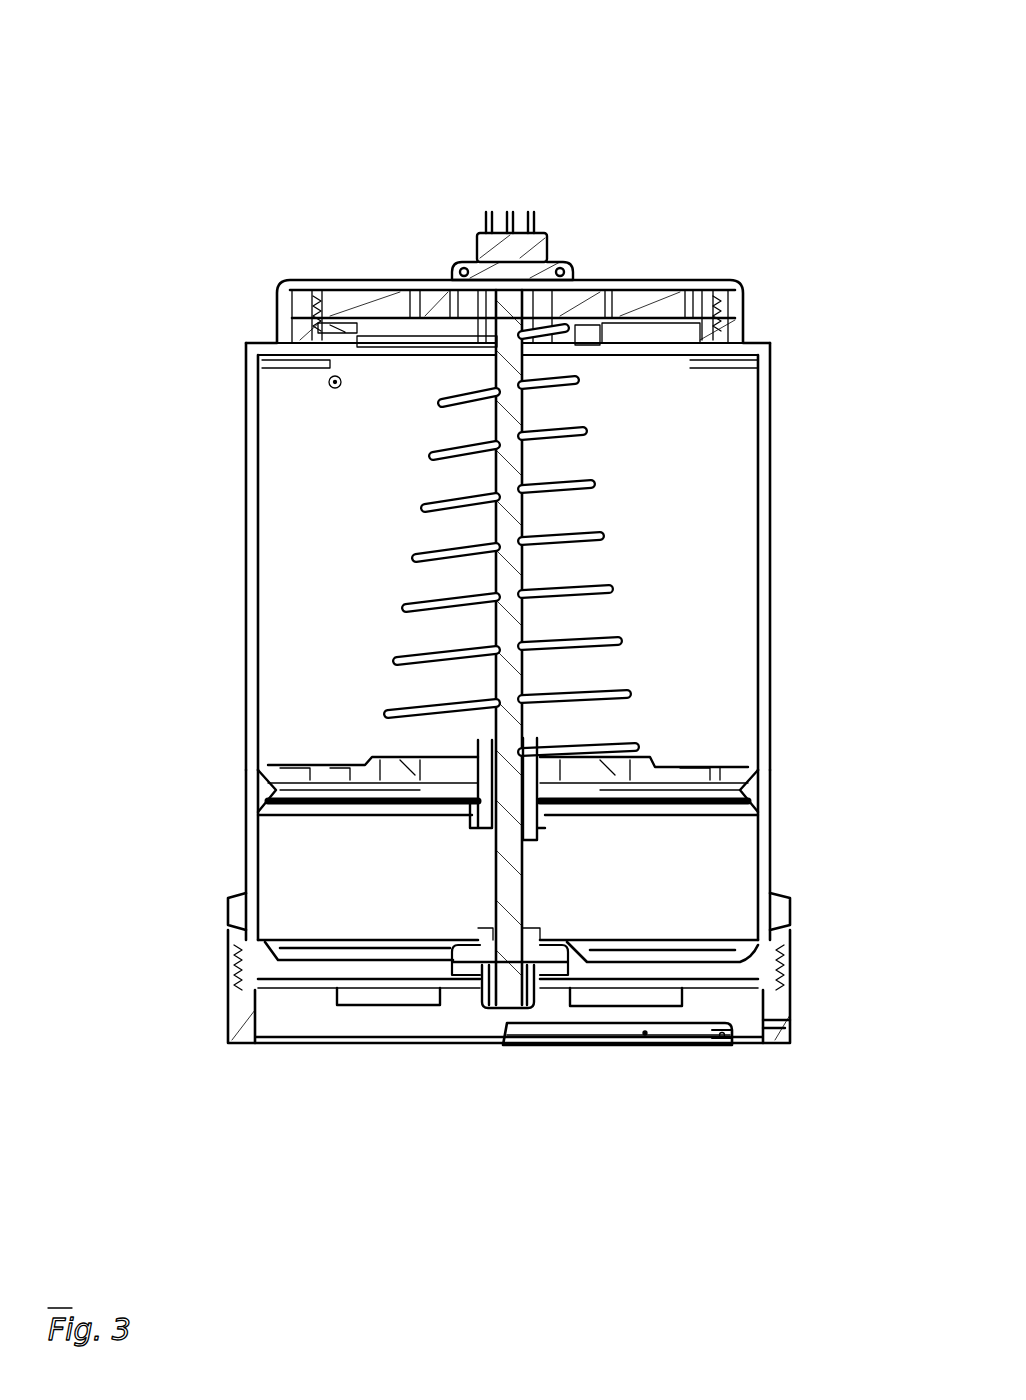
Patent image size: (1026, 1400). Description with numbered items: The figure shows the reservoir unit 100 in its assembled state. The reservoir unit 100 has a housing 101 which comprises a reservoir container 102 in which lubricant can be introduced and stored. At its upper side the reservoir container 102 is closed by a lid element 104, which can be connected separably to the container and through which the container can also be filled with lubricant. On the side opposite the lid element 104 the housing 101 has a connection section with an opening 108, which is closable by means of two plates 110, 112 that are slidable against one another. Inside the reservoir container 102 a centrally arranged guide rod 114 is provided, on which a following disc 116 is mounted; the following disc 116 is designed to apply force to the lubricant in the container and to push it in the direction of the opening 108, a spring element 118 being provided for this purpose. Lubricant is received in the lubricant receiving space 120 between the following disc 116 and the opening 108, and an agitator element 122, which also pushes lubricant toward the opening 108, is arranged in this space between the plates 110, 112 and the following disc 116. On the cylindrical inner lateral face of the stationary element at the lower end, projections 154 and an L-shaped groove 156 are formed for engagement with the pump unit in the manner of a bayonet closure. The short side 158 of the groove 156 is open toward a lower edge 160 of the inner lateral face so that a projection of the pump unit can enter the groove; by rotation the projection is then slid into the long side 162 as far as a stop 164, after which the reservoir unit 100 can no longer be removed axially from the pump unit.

The reservoir unit 100 is at (562, 33).
The housing 101 is at (250, 497).
The reservoir container 102 is at (286, 848).
The lid element 104 is at (292, 305).
The opening 108 is at (302, 1014).
The plate 110 is at (445, 963).
The plate 112 is at (345, 1016).
The guide rod 114 is at (510, 523).
The following disc 116 is at (714, 768).
The spring element 118 is at (600, 425).
The lubricant receiving space 120 is at (380, 890).
The agitator element 122 is at (562, 940).
The projections 154 is at (385, 993).
The L-shaped groove 156 is at (645, 1032).
The short side 158 is at (790, 1042).
The lower edge 160 is at (722, 1035).
The long side 162 is at (575, 1030).
The stop 164 is at (502, 1040).